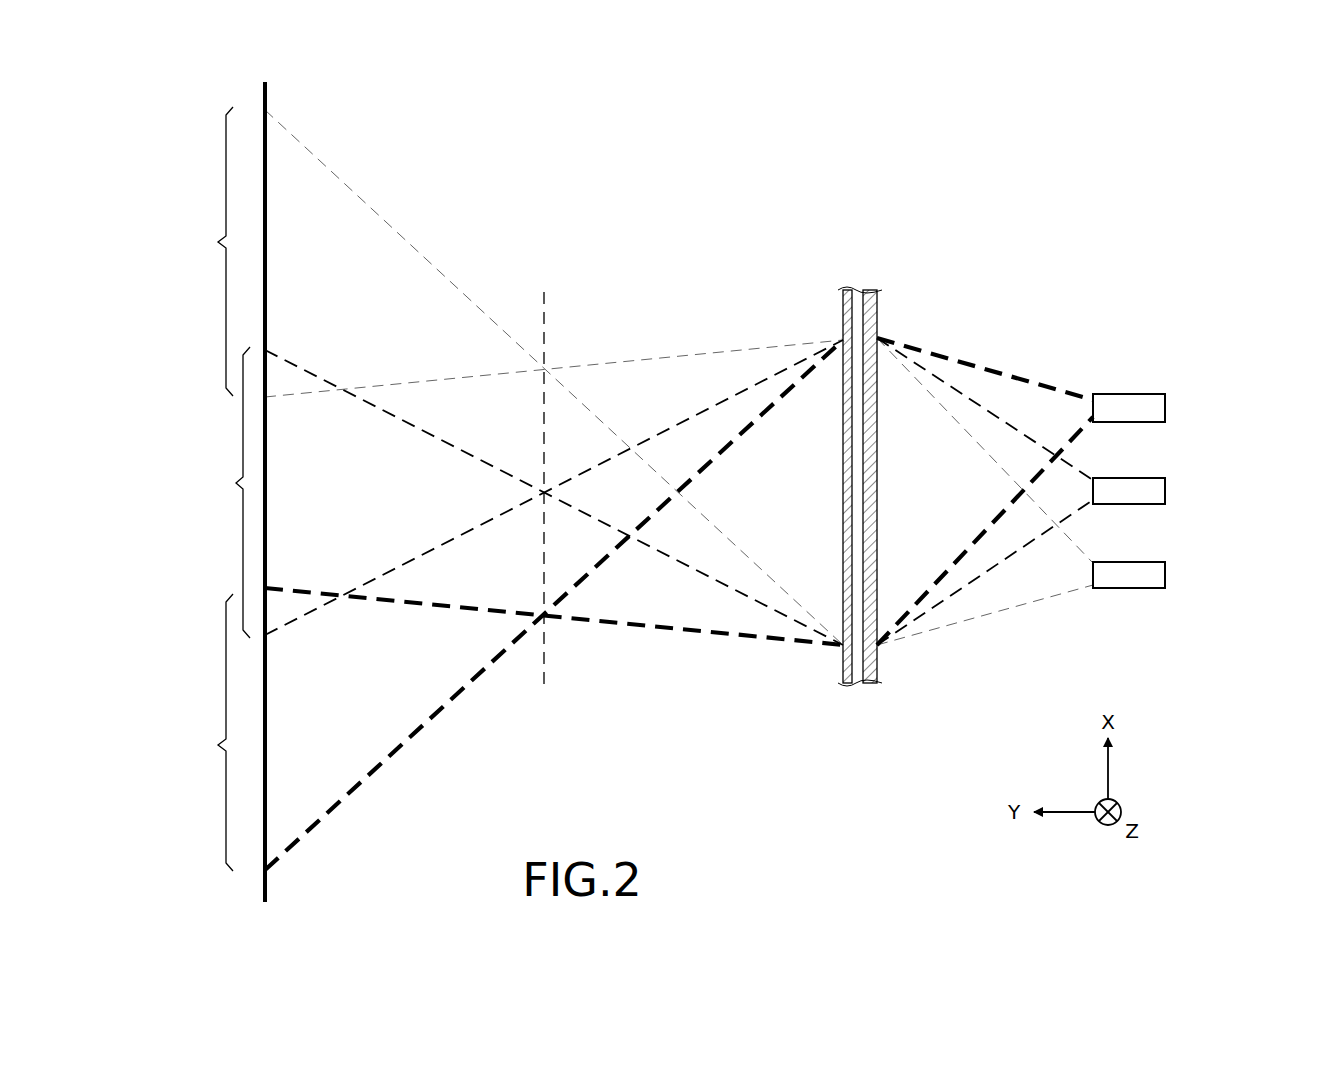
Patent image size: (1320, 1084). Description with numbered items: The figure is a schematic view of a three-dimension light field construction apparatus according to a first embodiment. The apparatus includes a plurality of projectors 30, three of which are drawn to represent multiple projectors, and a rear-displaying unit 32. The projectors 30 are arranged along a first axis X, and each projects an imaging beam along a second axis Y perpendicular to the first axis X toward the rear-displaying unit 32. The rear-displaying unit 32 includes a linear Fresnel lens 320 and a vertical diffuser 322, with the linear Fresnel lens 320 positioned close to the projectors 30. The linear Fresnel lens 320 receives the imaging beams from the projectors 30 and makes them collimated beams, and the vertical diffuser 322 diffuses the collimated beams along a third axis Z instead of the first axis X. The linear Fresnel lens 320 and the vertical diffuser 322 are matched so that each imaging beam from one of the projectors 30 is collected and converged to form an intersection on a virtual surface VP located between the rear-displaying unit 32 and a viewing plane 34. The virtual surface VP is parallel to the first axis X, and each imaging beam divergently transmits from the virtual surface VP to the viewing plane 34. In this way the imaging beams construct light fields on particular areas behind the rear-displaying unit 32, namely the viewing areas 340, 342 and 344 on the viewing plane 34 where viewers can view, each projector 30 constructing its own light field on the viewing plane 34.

The projectors 30 is at (1158, 403).
The rear-displaying unit 32 is at (864, 421).
The linear Fresnel lens 320 is at (918, 449).
The vertical diffuser 322 is at (843, 312).
The viewing plane 34 is at (268, 93).
The viewing area 340 is at (199, 251).
The viewing area 342 is at (216, 492).
The viewing area 344 is at (196, 732).
The virtual surface VP is at (544, 316).